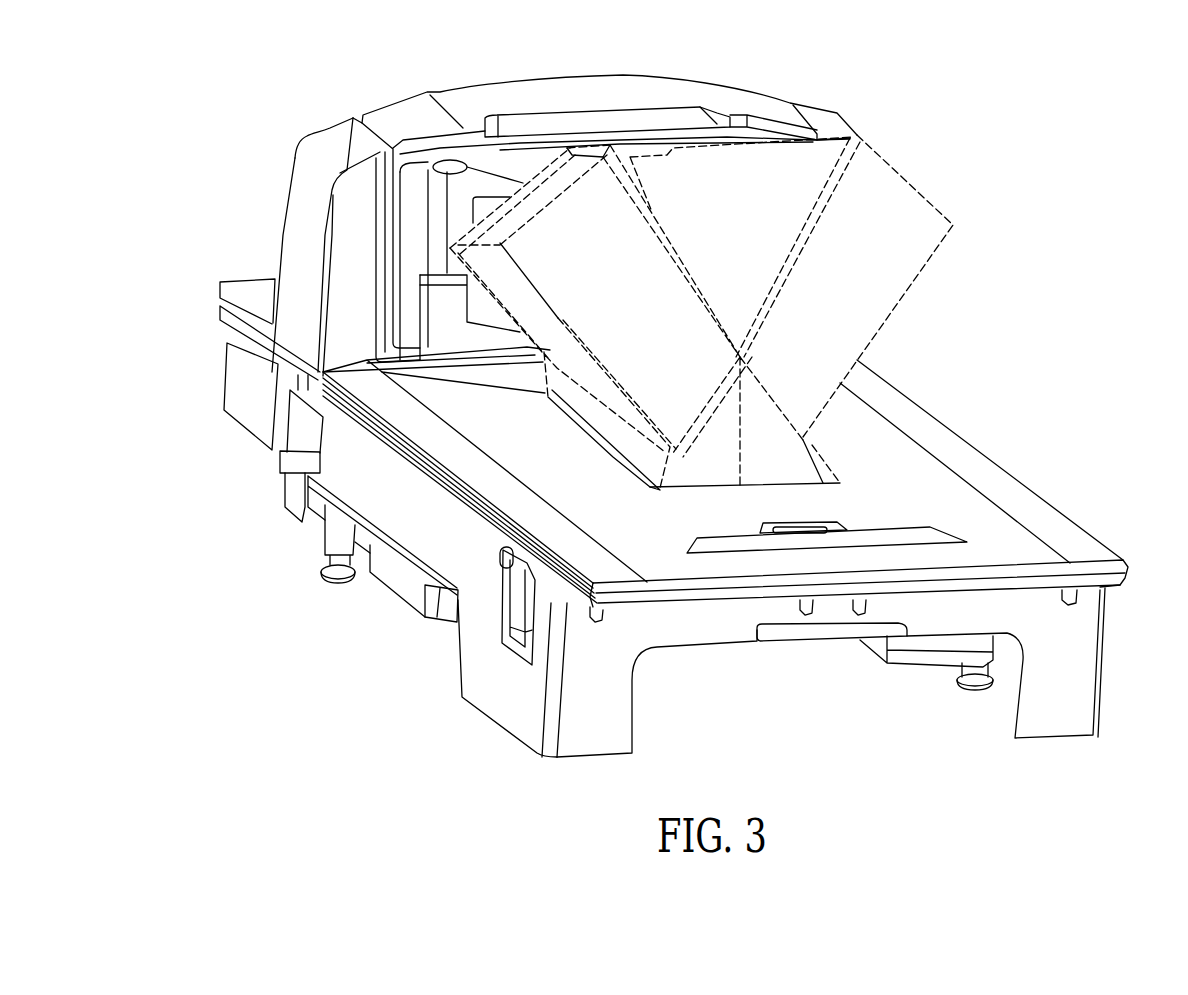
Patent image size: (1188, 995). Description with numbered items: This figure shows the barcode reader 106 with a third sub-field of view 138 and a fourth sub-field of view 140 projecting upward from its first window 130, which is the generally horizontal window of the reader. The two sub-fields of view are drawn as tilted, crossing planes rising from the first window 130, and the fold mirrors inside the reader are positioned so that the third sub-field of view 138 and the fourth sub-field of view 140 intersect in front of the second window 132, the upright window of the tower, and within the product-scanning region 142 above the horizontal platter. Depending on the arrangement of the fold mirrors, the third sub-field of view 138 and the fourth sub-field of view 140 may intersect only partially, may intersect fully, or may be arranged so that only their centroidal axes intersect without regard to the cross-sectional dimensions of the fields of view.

The barcode reader 106 is at (262, 80).
The first window 130 is at (840, 483).
The second window 132 is at (458, 208).
The third sub-field of view 138 is at (552, 347).
The fourth sub-field of view 140 is at (897, 193).
The product-scanning region 142 is at (913, 394).